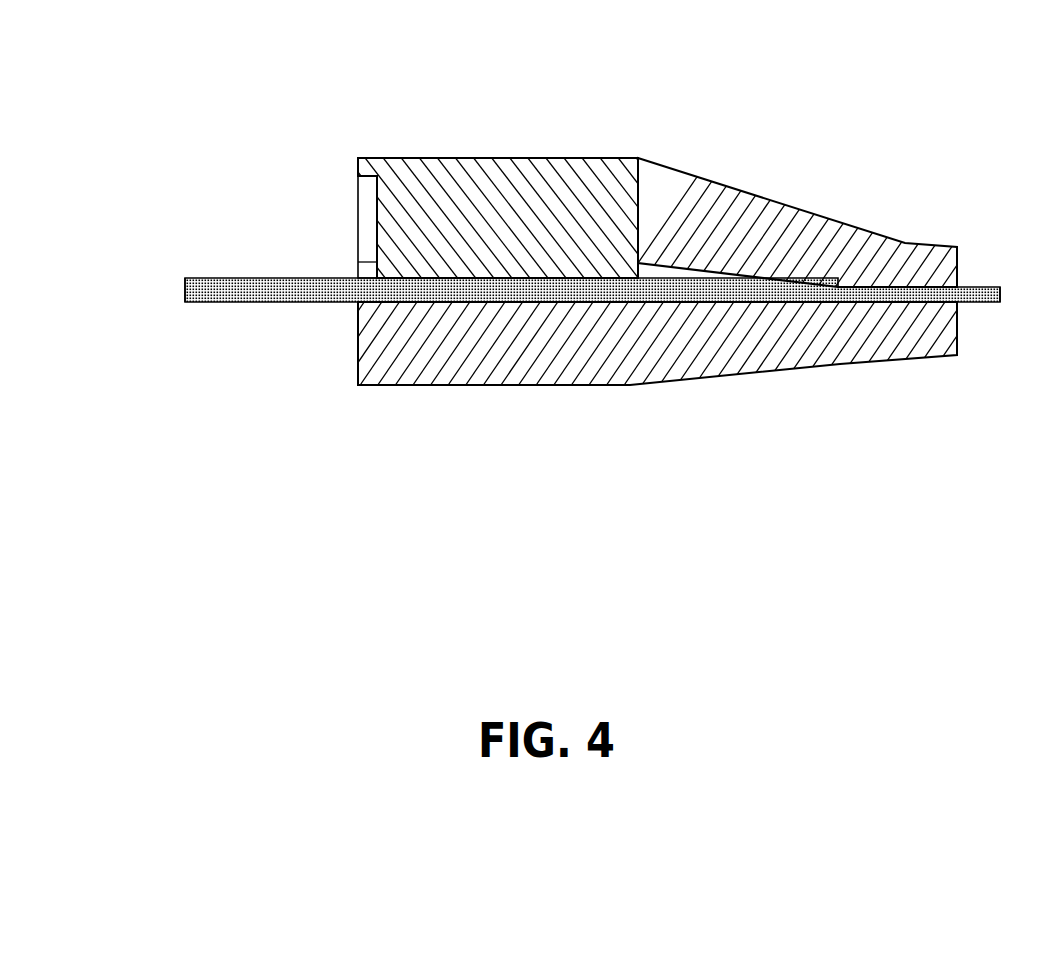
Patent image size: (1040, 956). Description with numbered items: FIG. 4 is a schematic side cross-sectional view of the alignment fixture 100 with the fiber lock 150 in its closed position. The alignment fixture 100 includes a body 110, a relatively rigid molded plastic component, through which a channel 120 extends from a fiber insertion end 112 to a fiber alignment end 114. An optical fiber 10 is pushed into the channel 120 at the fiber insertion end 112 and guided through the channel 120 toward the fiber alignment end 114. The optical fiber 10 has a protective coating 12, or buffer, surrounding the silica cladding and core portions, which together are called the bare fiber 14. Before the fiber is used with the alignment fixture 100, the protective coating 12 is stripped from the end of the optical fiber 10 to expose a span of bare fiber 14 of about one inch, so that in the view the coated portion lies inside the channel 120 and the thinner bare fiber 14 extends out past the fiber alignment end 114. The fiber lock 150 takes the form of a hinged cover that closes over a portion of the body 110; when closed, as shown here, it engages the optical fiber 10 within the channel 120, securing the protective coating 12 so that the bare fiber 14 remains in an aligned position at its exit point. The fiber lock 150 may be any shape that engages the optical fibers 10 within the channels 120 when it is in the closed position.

The alignment fixture 100 is at (331, 96).
The fiber lock 150 is at (507, 167).
The channel 120 is at (352, 250).
The body 110 is at (783, 203).
The fiber alignment end 114 is at (958, 245).
The fiber insertion end 112 is at (357, 350).
The optical fiber 10 is at (271, 322).
The protective coating 12 is at (202, 303).
The bare fiber 14 is at (985, 302).